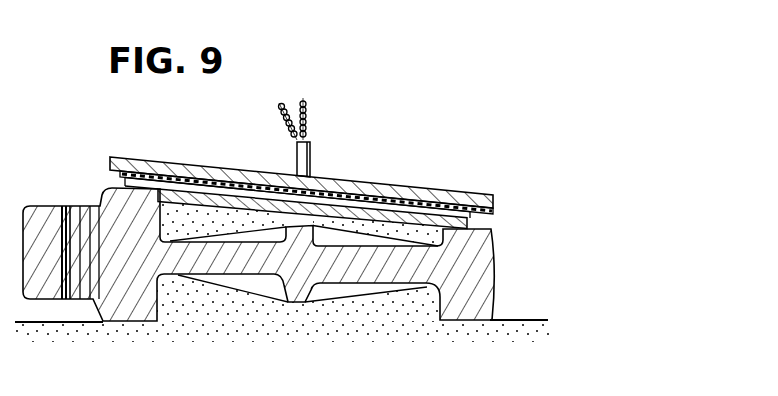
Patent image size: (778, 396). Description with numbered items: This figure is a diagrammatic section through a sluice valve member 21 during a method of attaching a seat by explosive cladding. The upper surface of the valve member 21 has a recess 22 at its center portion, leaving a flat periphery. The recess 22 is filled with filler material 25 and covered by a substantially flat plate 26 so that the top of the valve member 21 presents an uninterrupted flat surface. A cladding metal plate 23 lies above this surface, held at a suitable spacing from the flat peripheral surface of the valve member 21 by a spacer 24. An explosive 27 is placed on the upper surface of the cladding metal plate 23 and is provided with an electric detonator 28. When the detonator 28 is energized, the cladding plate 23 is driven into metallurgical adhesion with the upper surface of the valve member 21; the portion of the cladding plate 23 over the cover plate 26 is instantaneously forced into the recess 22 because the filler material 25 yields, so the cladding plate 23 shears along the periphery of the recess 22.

The valve member 21 is at (110, 310).
The recess 22 is at (248, 230).
The cladding metal plate 23 is at (464, 217).
The spacer 24 is at (122, 183).
The filler material 25 is at (434, 239).
The flat plate 26 is at (203, 200).
The explosive 27 is at (410, 192).
The electric detonator 28 is at (312, 145).